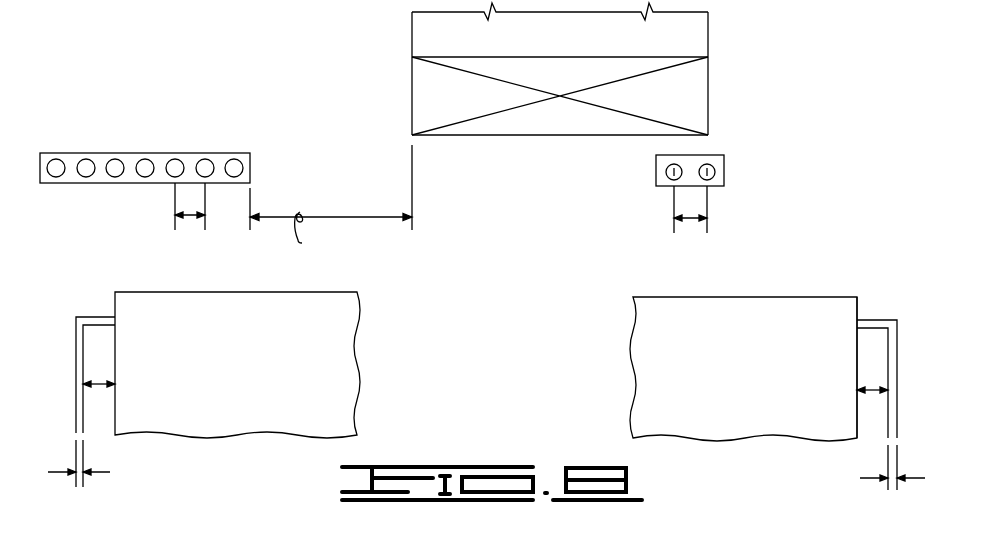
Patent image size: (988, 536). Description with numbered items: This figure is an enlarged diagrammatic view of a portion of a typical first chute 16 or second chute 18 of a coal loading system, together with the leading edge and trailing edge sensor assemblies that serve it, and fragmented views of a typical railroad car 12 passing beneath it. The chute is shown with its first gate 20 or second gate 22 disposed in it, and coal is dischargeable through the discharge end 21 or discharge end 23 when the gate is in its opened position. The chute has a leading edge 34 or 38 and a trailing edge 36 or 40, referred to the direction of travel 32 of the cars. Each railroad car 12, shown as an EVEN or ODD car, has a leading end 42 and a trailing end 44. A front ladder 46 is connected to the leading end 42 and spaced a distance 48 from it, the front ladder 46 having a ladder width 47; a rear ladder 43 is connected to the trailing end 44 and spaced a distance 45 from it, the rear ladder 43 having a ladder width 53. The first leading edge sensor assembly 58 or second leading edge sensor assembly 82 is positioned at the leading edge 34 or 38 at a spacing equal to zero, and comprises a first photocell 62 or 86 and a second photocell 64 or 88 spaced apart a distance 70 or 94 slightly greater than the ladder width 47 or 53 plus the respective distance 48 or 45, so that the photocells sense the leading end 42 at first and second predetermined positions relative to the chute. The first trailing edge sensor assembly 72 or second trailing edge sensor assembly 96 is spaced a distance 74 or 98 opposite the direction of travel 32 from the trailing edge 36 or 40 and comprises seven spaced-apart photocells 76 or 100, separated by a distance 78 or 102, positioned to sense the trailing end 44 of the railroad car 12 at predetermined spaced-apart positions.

The railroad car 12 is at (194, 292).
The first chute 16 is at (508, 30).
The second chute 18 is at (430, 38).
The first gate 20 is at (613, 96).
The second gate 22 is at (680, 80).
The discharge end 21 is at (560, 153).
The discharge end 23 is at (462, 136).
The direction of travel 32 is at (655, 297).
The leading edge 34 is at (765, 70).
The trailing edge 36 is at (360, 67).
The leading edge 38 is at (712, 24).
The trailing edge 40 is at (412, 27).
The leading end 42 is at (860, 303).
The rear ladder 43 is at (76, 342).
The trailing end 44 is at (112, 336).
The distance 45 is at (97, 386).
The front ladder 46 is at (897, 345).
The ladder width 47 is at (866, 478).
The distance 48 is at (870, 388).
The ladder width 53 is at (96, 478).
The first leading edge sensor assembly 58 is at (735, 155).
The second leading edge sensor assembly 82 is at (706, 155).
The first photocell 62 is at (738, 139).
The first photocell 86 is at (676, 163).
The second photocell 64 is at (757, 165).
The second photocell 88 is at (708, 172).
The distance 70 is at (729, 220).
The distance 94 is at (690, 220).
The first trailing edge sensor assembly 72 is at (145, 142).
The second trailing edge sensor assembly 96 is at (148, 112).
The distance 74 is at (331, 199).
The distance 98 is at (331, 199).
The photocells 76 is at (145, 125).
The photocells 100 is at (147, 166).
The distance 78 is at (164, 218).
The distance 102 is at (197, 238).